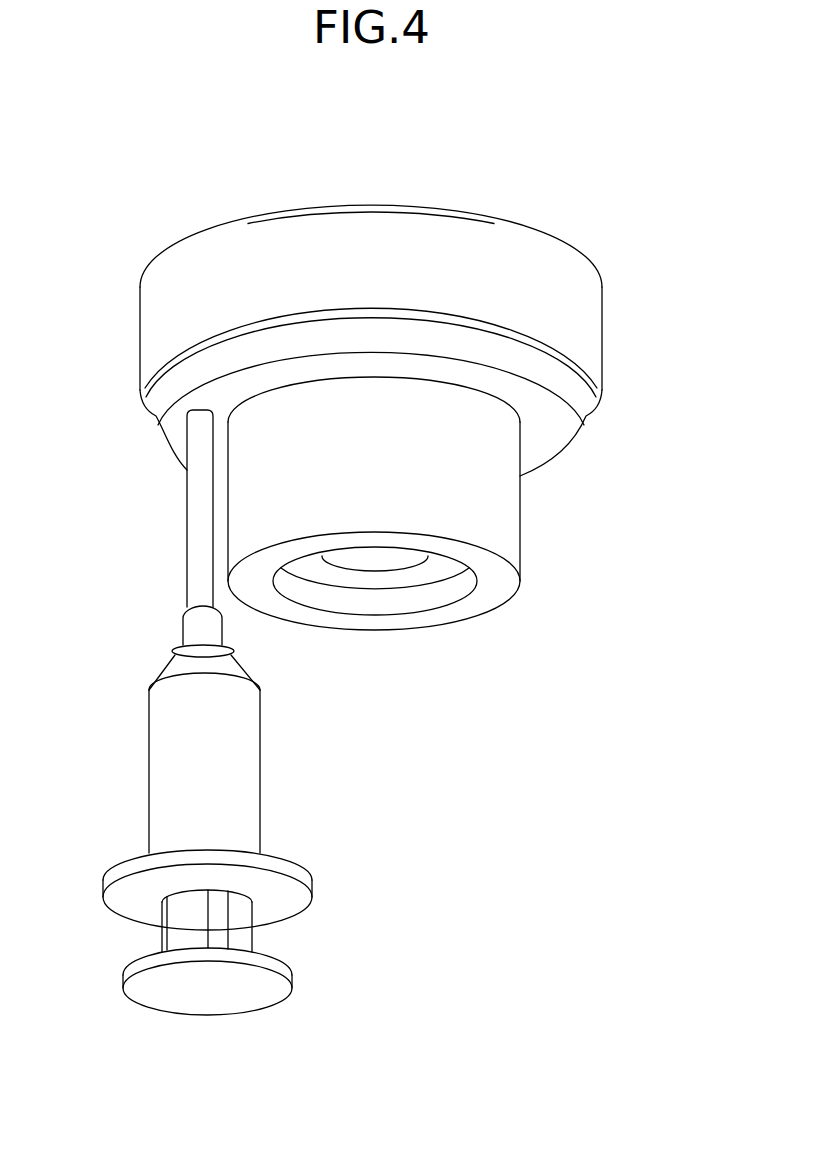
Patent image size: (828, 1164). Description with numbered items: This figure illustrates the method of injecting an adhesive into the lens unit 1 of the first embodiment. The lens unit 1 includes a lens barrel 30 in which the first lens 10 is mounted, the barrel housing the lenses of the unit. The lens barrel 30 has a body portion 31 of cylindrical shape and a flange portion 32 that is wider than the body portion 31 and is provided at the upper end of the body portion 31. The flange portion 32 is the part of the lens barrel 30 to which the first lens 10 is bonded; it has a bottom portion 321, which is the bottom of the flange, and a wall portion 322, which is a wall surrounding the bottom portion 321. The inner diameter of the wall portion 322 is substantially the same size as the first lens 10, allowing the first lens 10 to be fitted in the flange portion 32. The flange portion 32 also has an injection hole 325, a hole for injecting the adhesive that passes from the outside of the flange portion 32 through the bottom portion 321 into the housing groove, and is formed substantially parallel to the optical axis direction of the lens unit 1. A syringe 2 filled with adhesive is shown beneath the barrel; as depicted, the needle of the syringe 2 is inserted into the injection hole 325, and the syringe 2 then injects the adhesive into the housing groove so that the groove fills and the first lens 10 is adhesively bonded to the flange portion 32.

The lens unit 1 is at (497, 165).
The first lens 10 is at (378, 206).
The lens barrel 30 is at (132, 255).
The body portion 31 is at (504, 513).
The flange portion 32 is at (132, 331).
The bottom portion 321 is at (574, 378).
The wall portion 322 is at (604, 321).
The injection hole 325 is at (197, 414).
The syringe 2 is at (167, 745).